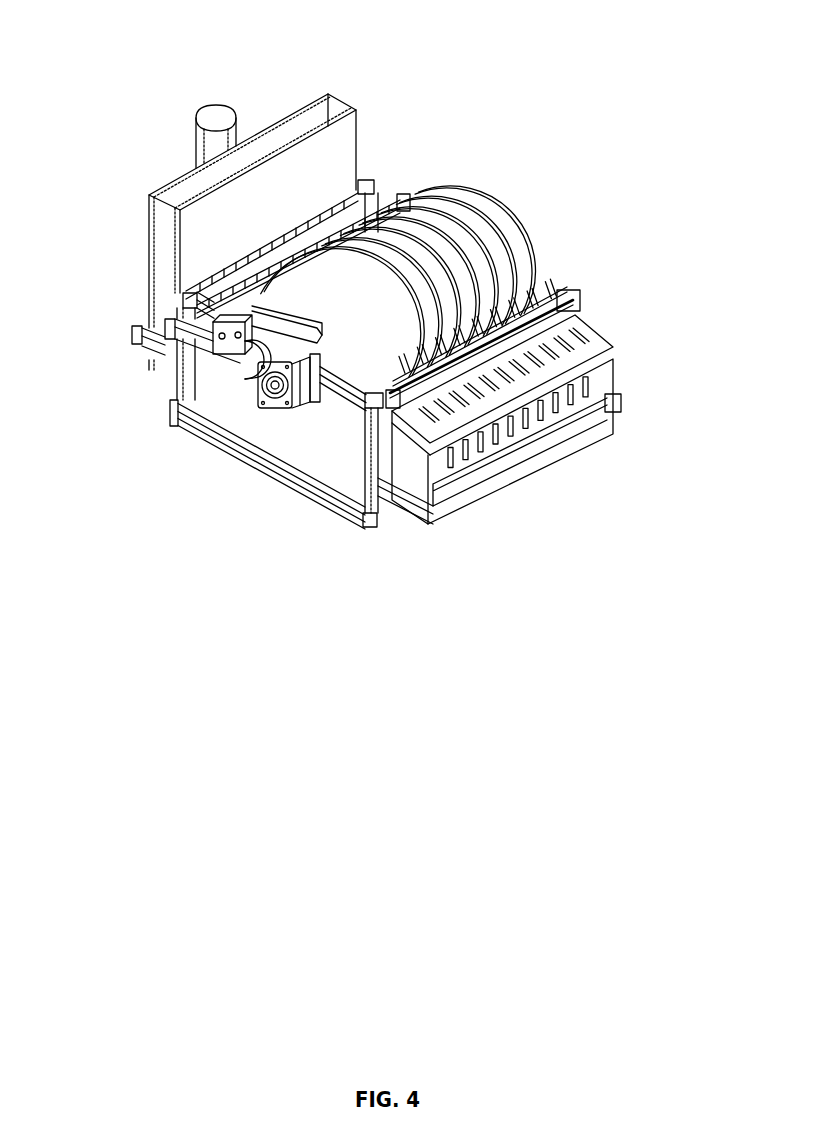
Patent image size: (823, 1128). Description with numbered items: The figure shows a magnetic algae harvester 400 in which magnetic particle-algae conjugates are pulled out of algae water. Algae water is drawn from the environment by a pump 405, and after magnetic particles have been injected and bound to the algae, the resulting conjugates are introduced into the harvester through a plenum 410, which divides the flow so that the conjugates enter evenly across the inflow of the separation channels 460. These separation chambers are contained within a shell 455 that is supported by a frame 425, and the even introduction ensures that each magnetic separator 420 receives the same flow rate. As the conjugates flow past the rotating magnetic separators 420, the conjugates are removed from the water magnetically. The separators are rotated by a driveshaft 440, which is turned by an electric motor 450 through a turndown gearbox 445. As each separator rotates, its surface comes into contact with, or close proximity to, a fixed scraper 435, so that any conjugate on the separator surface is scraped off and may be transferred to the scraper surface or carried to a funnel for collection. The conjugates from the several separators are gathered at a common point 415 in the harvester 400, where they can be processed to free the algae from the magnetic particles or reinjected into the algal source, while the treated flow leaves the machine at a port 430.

The algae harvester 400 is at (391, 393).
The pump 405 is at (191, 85).
The plenum 410 is at (353, 87).
The common point 415 is at (377, 203).
The magnetic separator 420 is at (522, 225).
The frame 425 is at (638, 396).
The port 430 is at (507, 450).
The scraper 435 is at (309, 353).
The driveshaft 440 is at (309, 382).
The turndown gearbox 445 is at (271, 423).
The electric motor 450 is at (228, 377).
The shell 455 is at (190, 378).
The separation channels 460 is at (186, 284).